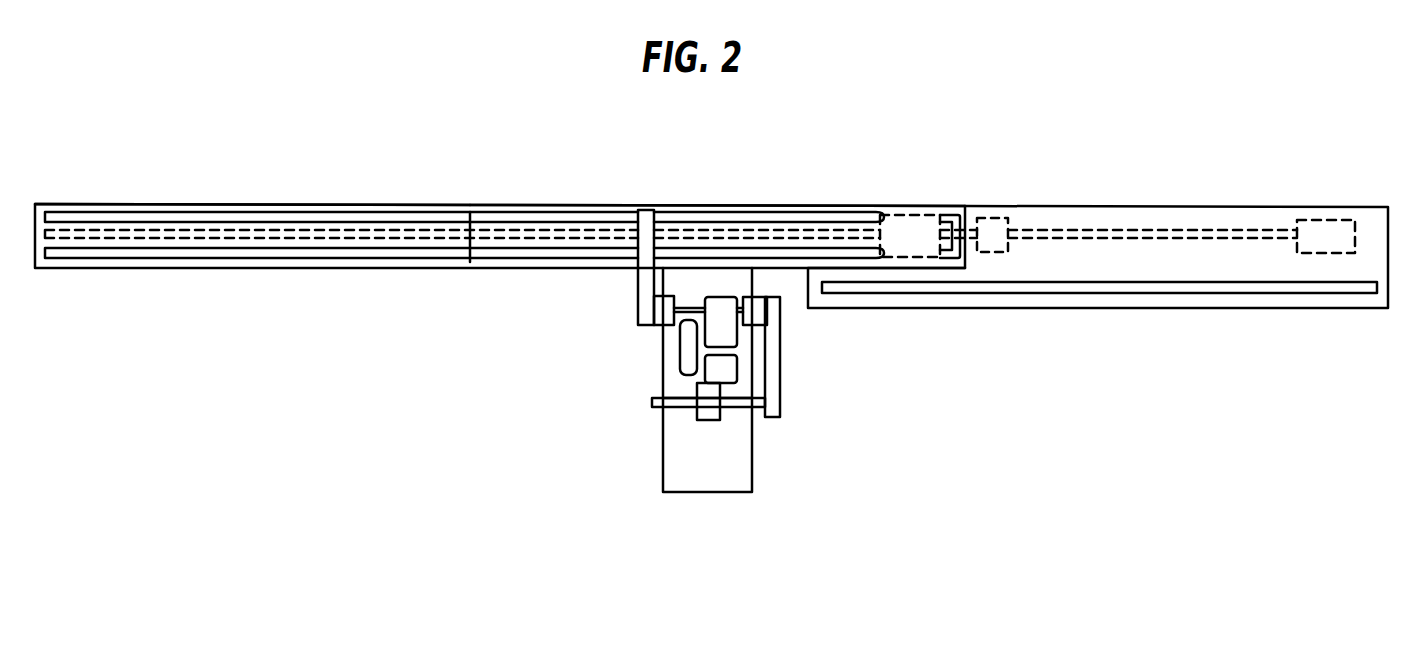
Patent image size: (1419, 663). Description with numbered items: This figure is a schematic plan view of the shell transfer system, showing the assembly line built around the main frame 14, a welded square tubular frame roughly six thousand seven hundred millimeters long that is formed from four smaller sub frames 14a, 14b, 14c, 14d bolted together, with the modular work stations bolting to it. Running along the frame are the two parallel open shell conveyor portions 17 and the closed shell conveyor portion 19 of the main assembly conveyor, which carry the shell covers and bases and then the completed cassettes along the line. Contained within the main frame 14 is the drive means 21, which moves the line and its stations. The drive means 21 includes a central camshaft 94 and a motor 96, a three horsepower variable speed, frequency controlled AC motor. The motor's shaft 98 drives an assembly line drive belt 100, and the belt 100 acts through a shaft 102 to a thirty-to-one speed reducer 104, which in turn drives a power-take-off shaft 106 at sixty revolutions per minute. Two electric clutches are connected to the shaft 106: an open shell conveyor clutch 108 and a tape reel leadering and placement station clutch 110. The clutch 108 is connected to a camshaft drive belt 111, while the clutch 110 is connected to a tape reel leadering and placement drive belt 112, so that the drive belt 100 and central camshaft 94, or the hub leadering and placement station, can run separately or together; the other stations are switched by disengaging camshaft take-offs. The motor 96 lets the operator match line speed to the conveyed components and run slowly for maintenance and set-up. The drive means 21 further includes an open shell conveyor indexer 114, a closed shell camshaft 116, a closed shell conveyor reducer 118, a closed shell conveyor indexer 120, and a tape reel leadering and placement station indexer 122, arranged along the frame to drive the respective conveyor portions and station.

The main frame 14 is at (486, 266).
The sub frame 14a is at (367, 204).
The sub frame 14b is at (715, 205).
The sub frame 14c is at (1050, 206).
The sub frame 14d is at (697, 493).
The open shell conveyor portions 17 is at (452, 212).
The closed shell conveyor portion 19 is at (1348, 290).
The drive means 21 is at (625, 532).
The central camshaft 94 is at (257, 232).
The motor 96 is at (662, 402).
The motor shaft 98 is at (665, 385).
The assembly line drive belt 100 is at (705, 372).
The shaft 102 is at (682, 345).
The speed reducer 104 is at (718, 308).
The power-take-off shaft 106 is at (650, 296).
The open shell conveyor clutch 108 is at (688, 318).
The tape reel leadering and placement station clutch 110 is at (762, 322).
The camshaft drive belt 111 is at (638, 215).
The tape reel leadering and placement drive belt 112 is at (772, 390).
The open shell conveyor indexer 114 is at (908, 232).
The closed shell camshaft 116 is at (1197, 232).
The closed shell conveyor reducer 118 is at (998, 245).
The closed shell conveyor indexer 120 is at (1325, 243).
The tape reel leadering and placement station indexer 122 is at (712, 418).